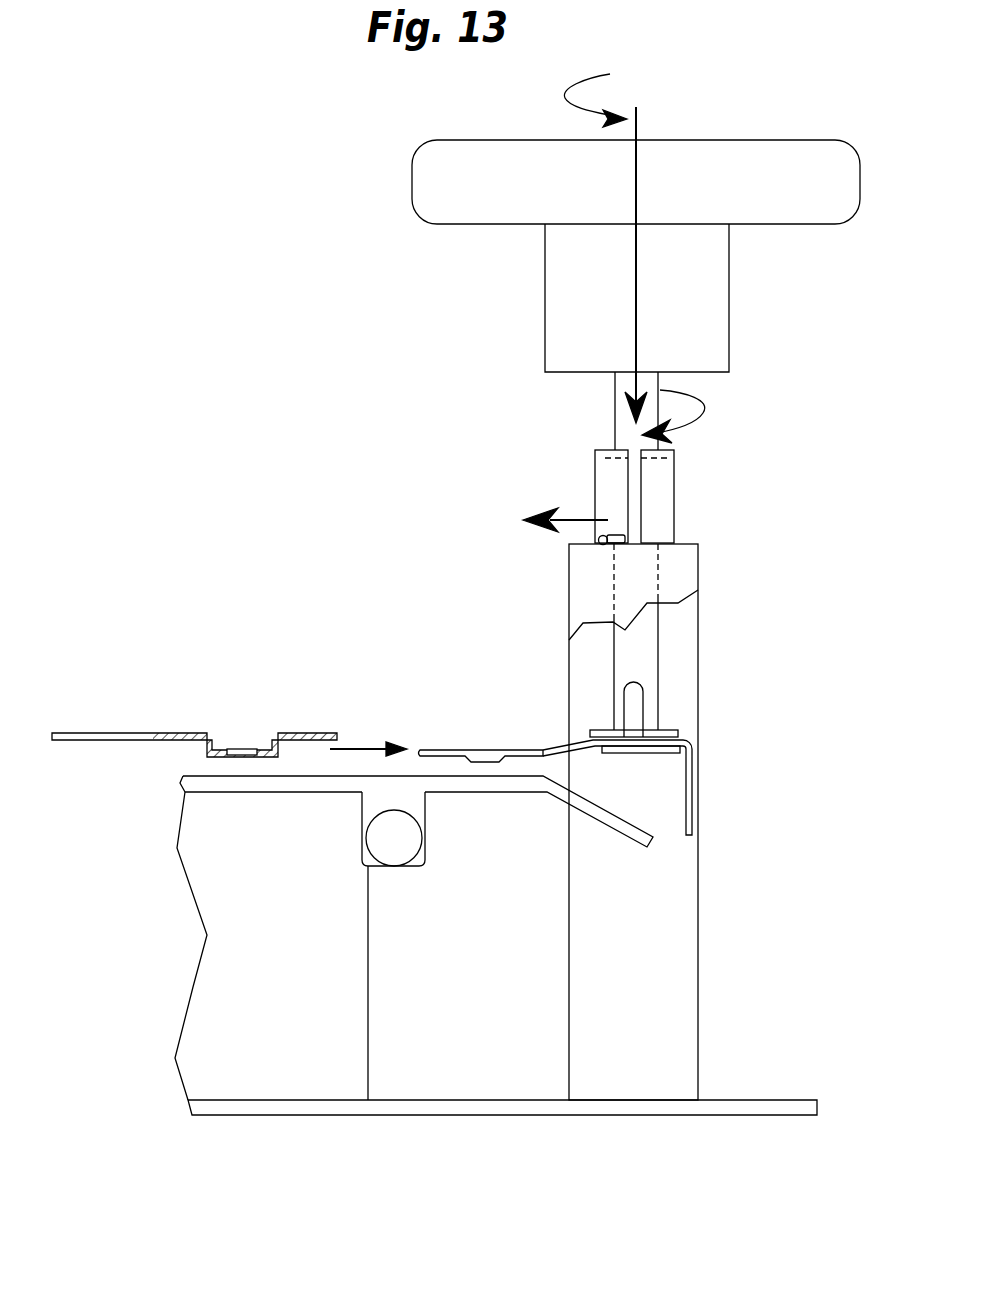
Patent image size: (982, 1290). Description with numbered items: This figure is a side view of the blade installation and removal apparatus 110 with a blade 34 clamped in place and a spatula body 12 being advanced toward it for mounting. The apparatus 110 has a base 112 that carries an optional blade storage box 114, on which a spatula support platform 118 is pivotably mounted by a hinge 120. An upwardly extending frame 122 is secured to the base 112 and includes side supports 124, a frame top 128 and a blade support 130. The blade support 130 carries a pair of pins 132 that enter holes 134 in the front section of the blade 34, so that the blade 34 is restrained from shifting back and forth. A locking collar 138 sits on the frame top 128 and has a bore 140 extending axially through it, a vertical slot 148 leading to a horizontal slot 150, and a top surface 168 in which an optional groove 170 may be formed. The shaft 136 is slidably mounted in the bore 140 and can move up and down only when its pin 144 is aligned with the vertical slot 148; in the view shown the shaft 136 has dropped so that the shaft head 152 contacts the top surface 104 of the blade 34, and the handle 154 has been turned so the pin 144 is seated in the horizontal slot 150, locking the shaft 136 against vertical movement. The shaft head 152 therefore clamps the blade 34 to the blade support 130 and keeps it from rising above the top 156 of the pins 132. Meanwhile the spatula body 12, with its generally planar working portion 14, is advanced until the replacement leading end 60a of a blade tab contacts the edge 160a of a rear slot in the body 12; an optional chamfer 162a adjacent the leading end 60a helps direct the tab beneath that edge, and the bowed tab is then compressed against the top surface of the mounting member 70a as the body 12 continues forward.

The blade installation and removal apparatus 110 is at (270, 152).
The handle 154 is at (438, 180).
The shaft 136 is at (615, 393).
The locking collar 138 is at (603, 492).
The vertical slot 148 is at (633, 477).
The groove 170 is at (608, 453).
The top surface of collar 168 is at (673, 448).
The pin 144 is at (590, 538).
The horizontal slot 150 is at (617, 547).
The frame top 128 is at (690, 543).
The bore 140 is at (657, 583).
The shaft head 152 is at (605, 737).
The top surface of front section 104 is at (590, 737).
The blade 34 is at (532, 720).
The top of pins 156 is at (641, 685).
The pins 132 is at (640, 698).
The holes 134 is at (647, 730).
The blade support 130 is at (658, 750).
The replacement leading end 60a is at (420, 752).
The chamfer 162a is at (422, 748).
The working portion 14 is at (117, 732).
The edge of rear slot 160a is at (213, 733).
The spatula body 12 is at (74, 704).
The mounting member 70a is at (174, 763).
The spatula support platform 118 is at (240, 783).
The hinge 120 is at (393, 847).
The blade storage box 114 is at (210, 1010).
The base 112 is at (257, 1107).
The frame 122 is at (670, 956).
The side supports 124 is at (675, 1018).